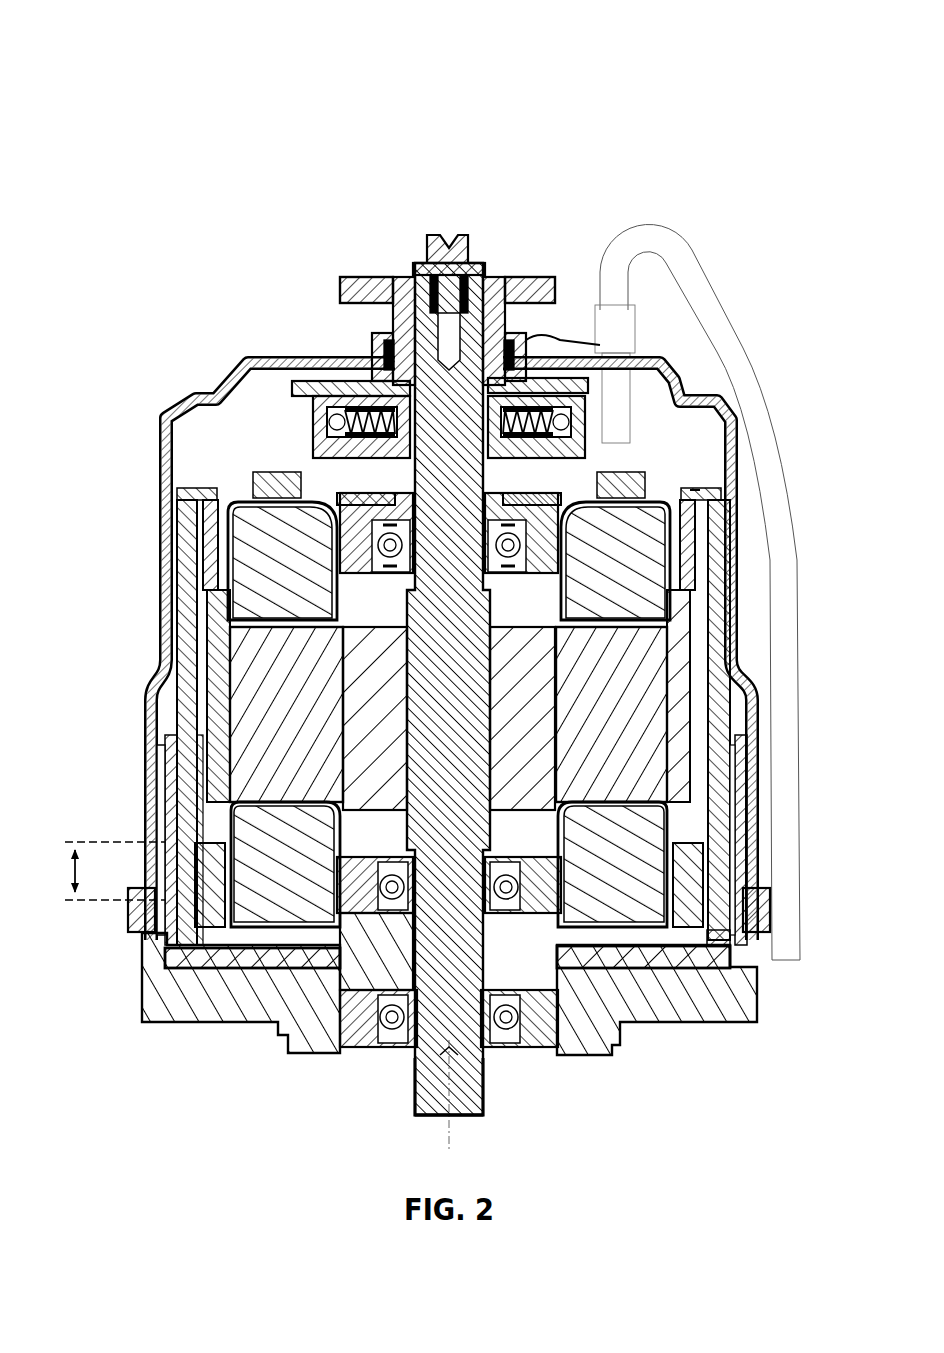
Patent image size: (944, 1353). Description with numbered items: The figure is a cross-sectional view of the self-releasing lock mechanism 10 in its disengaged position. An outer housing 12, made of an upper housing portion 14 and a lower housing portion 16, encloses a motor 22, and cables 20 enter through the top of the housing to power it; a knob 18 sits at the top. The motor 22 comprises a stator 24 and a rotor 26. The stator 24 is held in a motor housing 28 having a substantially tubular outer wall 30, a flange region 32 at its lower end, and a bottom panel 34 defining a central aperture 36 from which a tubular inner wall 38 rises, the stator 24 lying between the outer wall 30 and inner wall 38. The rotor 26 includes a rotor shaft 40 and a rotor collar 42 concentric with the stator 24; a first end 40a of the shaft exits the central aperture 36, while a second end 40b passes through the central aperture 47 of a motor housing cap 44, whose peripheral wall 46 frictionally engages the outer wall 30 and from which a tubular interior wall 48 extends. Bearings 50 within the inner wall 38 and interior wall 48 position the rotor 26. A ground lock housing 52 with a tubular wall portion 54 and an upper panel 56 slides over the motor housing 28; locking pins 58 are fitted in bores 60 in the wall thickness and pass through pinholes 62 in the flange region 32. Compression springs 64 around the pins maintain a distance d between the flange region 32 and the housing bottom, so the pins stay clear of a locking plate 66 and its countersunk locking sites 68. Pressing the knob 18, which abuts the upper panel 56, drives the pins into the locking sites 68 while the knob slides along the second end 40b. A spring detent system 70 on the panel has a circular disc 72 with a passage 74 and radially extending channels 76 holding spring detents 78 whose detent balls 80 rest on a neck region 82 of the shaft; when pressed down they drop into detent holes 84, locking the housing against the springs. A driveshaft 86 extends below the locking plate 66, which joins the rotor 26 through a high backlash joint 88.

The self-releasing lock mechanism 10 is at (174, 94).
The outer housing 12 is at (204, 385).
The upper housing portion 14 is at (738, 612).
The lower housing portion 16 is at (758, 1000).
The knob 18 is at (502, 280).
The cables 20 is at (676, 238).
The motor 22 is at (209, 580).
The stator 24 is at (278, 730).
The rotor 26 is at (512, 712).
The motor housing 28 is at (164, 682).
The outer wall 30 is at (186, 545).
The flange region 32 is at (771, 912).
The bottom panel 34 is at (231, 972).
The central aperture 36 is at (346, 1053).
The inner wall 38 is at (345, 800).
The rotor shaft 40 is at (430, 702).
The first end of rotor shaft 40a is at (420, 889).
The second end of rotor shaft 40b is at (420, 397).
The rotor collar 42 is at (702, 645).
The motor housing cap 44 is at (700, 490).
The peripheral wall 46 is at (718, 540).
The central aperture 47 is at (358, 400).
The interior wall 48 is at (350, 468).
The bearings 50 is at (562, 500).
The ground lock housing 52 is at (176, 493).
The tubular wall portion 54 is at (696, 575).
The upper panel 56 is at (268, 358).
The locking pins 58 is at (745, 812).
The bores 60 is at (740, 752).
The pinholes 62 is at (718, 947).
The compression springs 64 is at (745, 862).
The locking plate 66 is at (672, 970).
The locking sites 68 is at (178, 962).
The spring detent system 70 is at (534, 338).
The circular disc 72 is at (640, 396).
The passage 74 is at (441, 240).
The radially extending channels 76 is at (300, 416).
The spring detents 78 is at (682, 366).
The detent ball 80 is at (525, 385).
The neck region 82 is at (428, 300).
The detent holes 84 is at (388, 340).
The driveshaft 86 is at (485, 1095).
The high backlash joint 88 is at (449, 1118).
The distance d is at (98, 871).